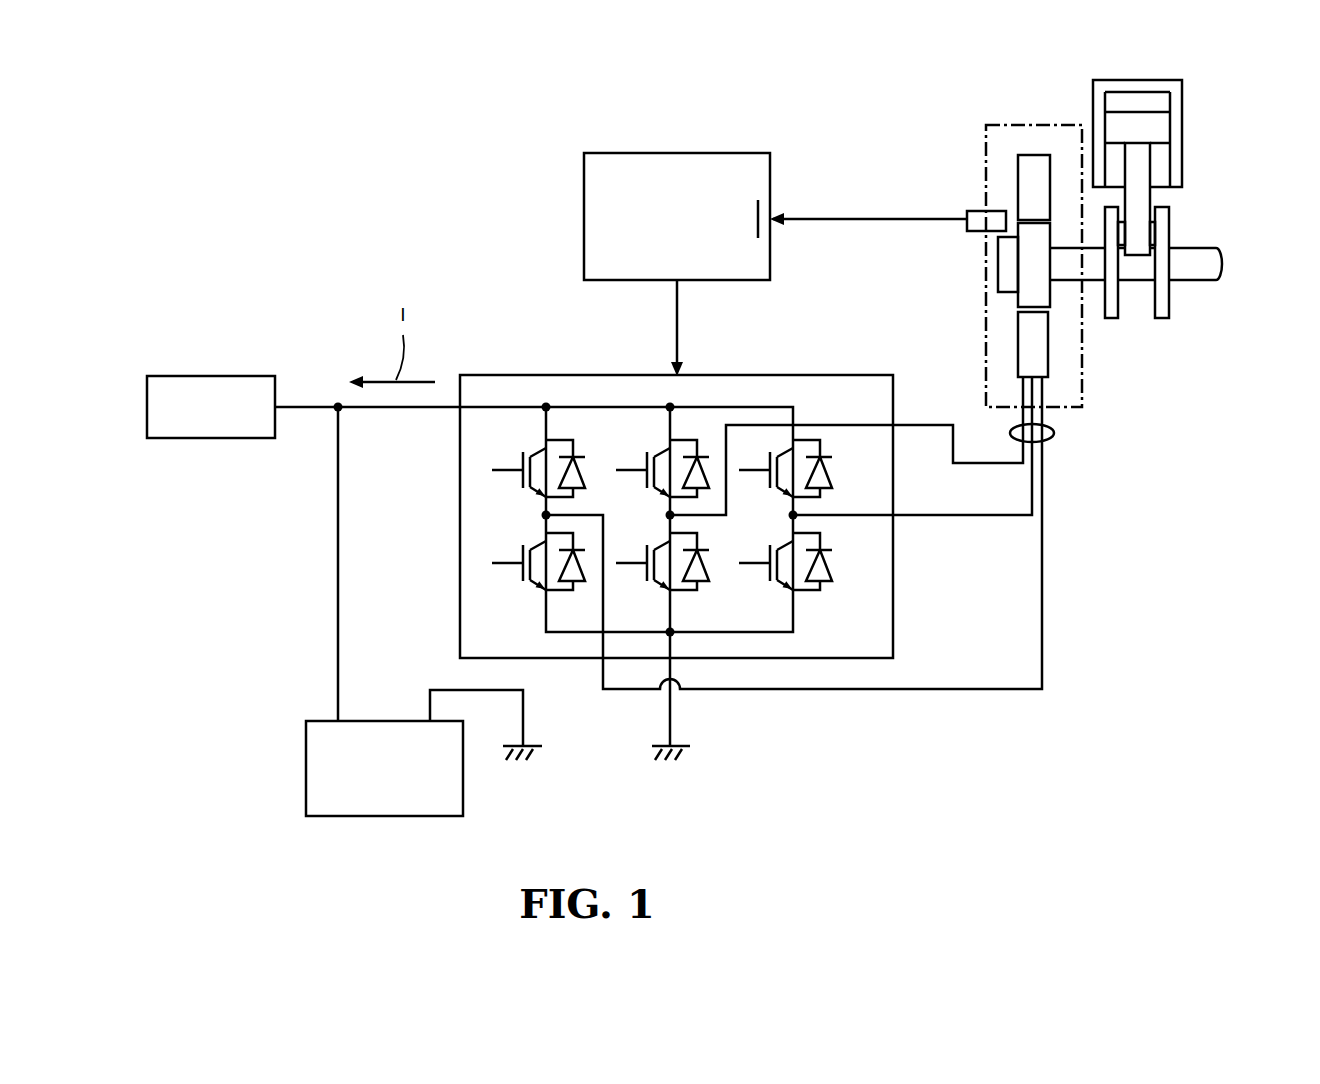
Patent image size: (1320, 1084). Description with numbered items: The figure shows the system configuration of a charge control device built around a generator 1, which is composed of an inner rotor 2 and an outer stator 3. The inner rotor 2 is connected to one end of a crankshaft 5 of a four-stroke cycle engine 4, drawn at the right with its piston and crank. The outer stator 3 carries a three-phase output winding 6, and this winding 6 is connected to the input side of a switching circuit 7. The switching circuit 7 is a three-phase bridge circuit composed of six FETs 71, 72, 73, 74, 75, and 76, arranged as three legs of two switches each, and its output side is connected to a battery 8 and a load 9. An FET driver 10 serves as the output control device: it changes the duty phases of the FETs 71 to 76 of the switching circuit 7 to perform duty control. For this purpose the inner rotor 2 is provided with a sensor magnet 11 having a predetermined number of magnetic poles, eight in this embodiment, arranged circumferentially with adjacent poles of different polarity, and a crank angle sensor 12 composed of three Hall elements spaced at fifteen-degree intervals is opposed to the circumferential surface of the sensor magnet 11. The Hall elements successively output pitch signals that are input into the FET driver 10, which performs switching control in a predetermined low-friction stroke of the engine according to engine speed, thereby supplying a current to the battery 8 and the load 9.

The generator 1 is at (1005, 112).
The inner rotor 2 is at (1040, 295).
The outer stator 3 is at (1025, 345).
The four-stroke cycle engine 4 is at (1200, 193).
The crankshaft 5 is at (1090, 275).
The three-phase output winding 6 is at (1052, 440).
The switching circuit 7 is at (893, 618).
The battery 8 is at (423, 816).
The load 9 is at (222, 438).
The FET driver 10 is at (732, 153).
The sensor magnet 11 is at (998, 265).
The crank angle sensor 12 is at (977, 211).
The FET 71 is at (537, 493).
The FET 72 is at (661, 493).
The FET 73 is at (784, 493).
The FET 74 is at (537, 588).
The FET 75 is at (661, 588).
The FET 76 is at (784, 588).